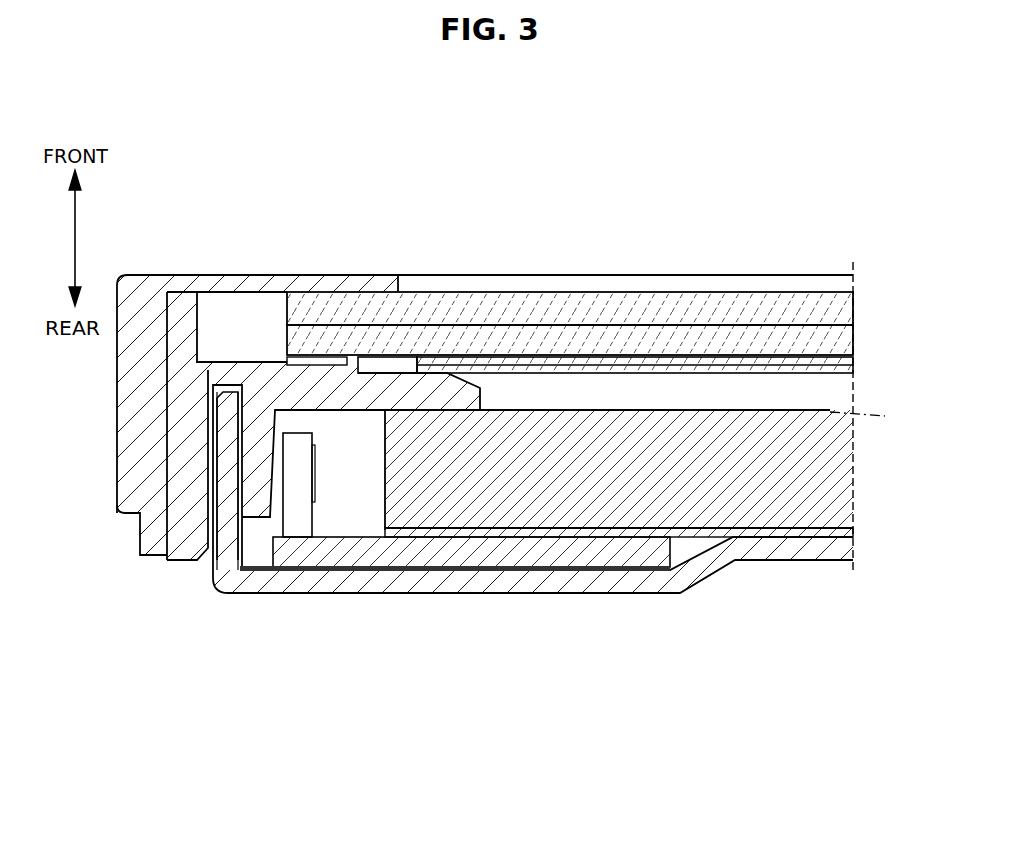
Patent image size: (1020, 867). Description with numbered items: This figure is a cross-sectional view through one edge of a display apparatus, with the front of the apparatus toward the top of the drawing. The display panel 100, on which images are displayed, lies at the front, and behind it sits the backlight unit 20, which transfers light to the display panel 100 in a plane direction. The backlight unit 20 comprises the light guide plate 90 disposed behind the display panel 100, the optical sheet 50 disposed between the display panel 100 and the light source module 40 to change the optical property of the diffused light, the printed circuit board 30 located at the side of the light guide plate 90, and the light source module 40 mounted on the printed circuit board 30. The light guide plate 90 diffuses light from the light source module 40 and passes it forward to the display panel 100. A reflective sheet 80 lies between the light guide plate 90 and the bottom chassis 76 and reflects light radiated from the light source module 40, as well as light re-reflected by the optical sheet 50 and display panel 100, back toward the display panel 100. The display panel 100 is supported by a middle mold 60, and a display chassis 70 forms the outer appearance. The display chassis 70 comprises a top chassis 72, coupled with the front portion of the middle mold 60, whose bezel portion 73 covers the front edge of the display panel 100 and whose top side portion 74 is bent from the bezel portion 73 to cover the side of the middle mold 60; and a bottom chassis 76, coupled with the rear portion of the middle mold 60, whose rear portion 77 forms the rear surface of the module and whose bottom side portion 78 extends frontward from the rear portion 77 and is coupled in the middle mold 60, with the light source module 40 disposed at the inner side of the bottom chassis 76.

The backlight unit 20 is at (872, 523).
The printed circuit board 30 is at (403, 555).
The light source module 40 is at (305, 512).
The optical sheet 50 is at (850, 365).
The middle mold 60 is at (185, 540).
The display chassis 70 is at (495, 568).
The top chassis 72 is at (115, 464).
The bezel portion 73 is at (272, 282).
The top side portion 74 is at (135, 387).
The bottom chassis 76 is at (261, 546).
The rear portion 77 is at (548, 590).
The bottom side portion 78 is at (225, 440).
The reflective sheet 80 is at (775, 537).
The light guide plate 90 is at (840, 481).
The display panel 100 is at (521, 274).